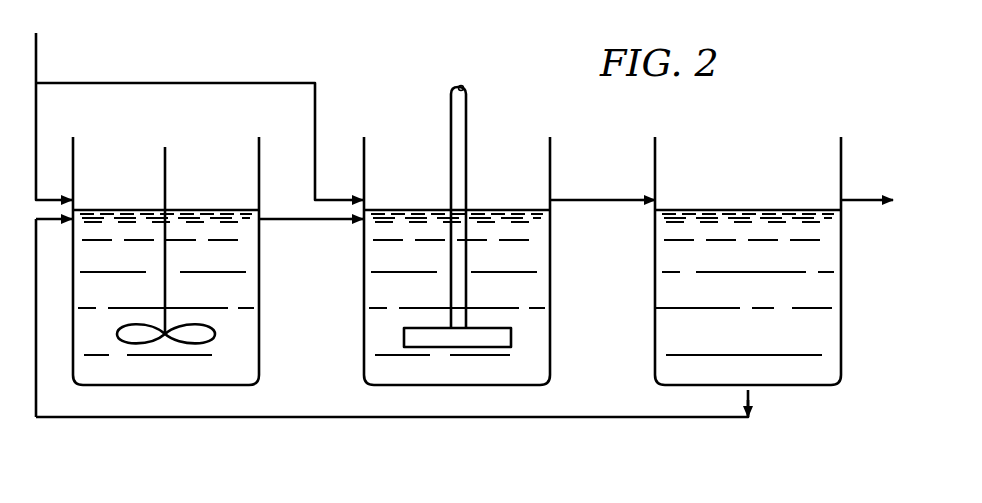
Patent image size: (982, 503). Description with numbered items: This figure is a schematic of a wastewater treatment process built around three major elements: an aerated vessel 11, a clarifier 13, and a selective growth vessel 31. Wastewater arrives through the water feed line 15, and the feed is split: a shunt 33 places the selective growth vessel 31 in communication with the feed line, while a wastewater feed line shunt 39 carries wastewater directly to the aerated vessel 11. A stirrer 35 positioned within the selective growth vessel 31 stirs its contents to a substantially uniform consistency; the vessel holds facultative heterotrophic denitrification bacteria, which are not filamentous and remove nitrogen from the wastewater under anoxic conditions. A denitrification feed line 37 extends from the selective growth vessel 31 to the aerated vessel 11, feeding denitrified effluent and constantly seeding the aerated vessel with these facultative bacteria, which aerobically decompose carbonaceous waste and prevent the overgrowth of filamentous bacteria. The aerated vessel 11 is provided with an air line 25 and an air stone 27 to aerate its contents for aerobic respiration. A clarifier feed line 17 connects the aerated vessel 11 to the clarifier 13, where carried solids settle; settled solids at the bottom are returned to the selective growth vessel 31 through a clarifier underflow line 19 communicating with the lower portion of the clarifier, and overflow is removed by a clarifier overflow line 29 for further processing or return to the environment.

The aerated vessel 11 is at (550, 305).
The clarifier 13 is at (655, 327).
The water feed line 15 is at (36, 43).
The clarifier feed line 17 is at (595, 203).
The clarifier underflow line 19 is at (400, 420).
The air line 25 is at (466, 158).
The air stone 27 is at (511, 338).
The clarifier overflow line 29 is at (862, 203).
The selective growth vessel 31 is at (259, 283).
The shunt 33 is at (36, 127).
The stirrer 35 is at (215, 334).
The denitrification feed line 37 is at (305, 220).
The wastewater feed line shunt 39 is at (237, 83).